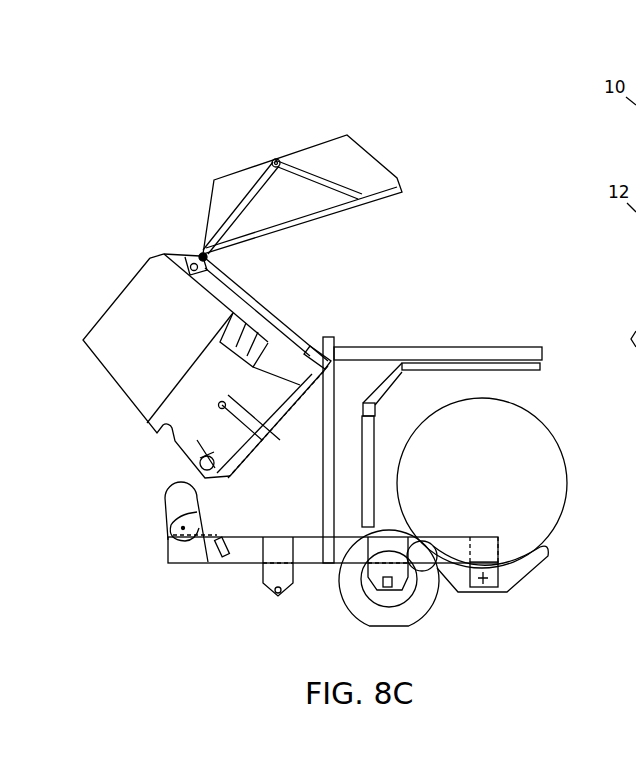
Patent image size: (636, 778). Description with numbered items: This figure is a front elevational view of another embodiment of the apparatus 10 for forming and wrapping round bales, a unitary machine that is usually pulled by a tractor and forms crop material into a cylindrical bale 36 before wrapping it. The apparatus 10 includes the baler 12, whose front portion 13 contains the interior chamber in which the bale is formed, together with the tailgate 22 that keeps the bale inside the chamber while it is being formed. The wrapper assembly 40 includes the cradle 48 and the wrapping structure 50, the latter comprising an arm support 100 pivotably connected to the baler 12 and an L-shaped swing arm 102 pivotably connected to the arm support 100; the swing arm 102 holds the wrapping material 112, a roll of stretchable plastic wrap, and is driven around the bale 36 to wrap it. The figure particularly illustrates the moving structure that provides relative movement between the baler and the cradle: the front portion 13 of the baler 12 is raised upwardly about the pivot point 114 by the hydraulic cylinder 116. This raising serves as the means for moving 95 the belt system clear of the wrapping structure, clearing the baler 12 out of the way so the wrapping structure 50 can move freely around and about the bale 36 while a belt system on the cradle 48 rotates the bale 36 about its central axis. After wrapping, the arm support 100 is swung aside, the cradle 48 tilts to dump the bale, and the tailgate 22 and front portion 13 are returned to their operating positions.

The apparatus 10 is at (178, 118).
The baler 12 is at (108, 262).
The front portion 13 is at (165, 340).
The tailgate 22 is at (385, 140).
The bale 36 is at (562, 467).
The wrapper assembly 40 is at (430, 290).
The cradle 48 is at (523, 583).
The wrapping structure 50 is at (397, 328).
The means for moving 95 is at (219, 575).
The arm support 100 is at (492, 355).
The swing arm 102 is at (505, 373).
The wrapping material 112 is at (393, 437).
The pivot point 114 is at (178, 530).
The hydraulic cylinder 116 is at (223, 540).